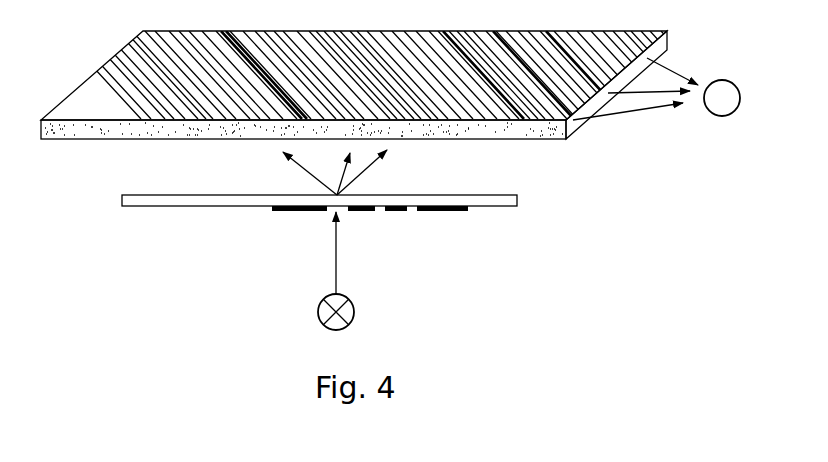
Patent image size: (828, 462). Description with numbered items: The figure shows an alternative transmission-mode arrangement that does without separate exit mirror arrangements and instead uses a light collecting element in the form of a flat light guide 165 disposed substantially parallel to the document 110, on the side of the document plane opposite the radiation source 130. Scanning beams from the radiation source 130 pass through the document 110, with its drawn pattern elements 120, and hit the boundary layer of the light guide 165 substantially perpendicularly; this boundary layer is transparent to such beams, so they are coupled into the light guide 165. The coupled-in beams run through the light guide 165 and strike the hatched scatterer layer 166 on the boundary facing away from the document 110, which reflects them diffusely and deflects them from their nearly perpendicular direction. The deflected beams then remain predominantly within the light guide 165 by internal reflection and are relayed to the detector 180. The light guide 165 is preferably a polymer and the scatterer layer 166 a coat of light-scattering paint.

The scatterer layer 166 is at (143, 32).
The light guide 165 is at (153, 112).
The document 110 is at (517, 201).
The pattern elements 120 is at (423, 211).
The radiation source 130 is at (355, 313).
The detector 180 is at (720, 117).